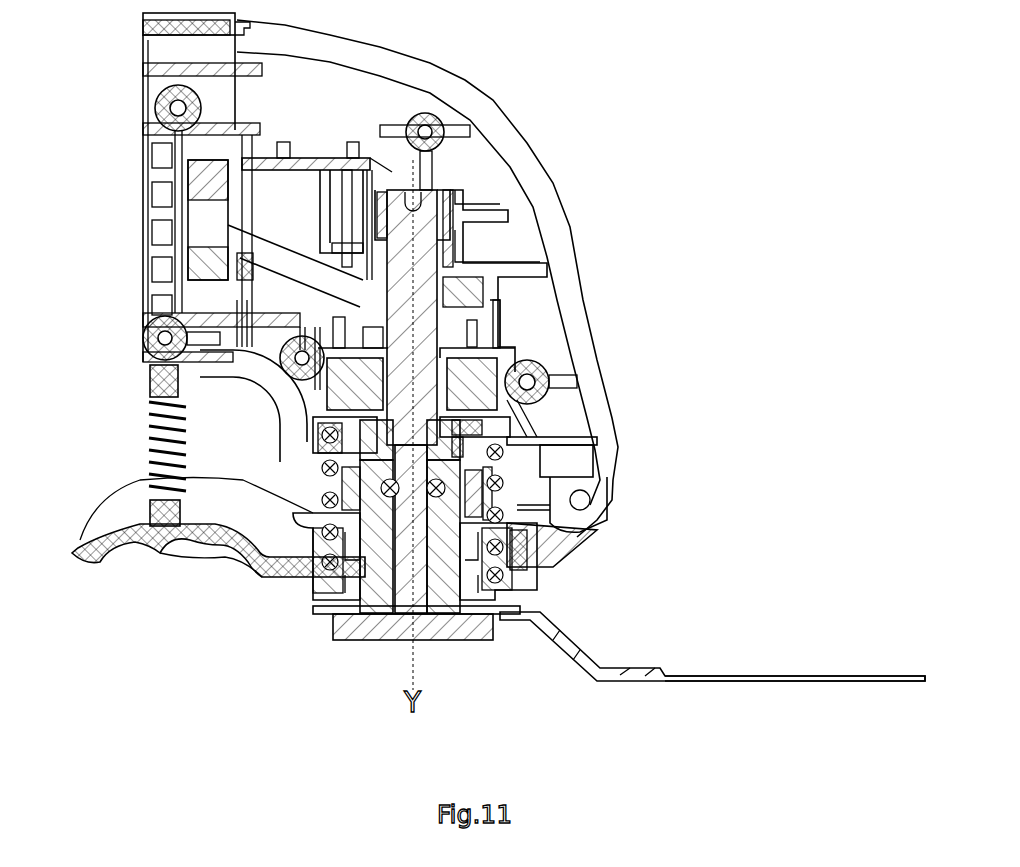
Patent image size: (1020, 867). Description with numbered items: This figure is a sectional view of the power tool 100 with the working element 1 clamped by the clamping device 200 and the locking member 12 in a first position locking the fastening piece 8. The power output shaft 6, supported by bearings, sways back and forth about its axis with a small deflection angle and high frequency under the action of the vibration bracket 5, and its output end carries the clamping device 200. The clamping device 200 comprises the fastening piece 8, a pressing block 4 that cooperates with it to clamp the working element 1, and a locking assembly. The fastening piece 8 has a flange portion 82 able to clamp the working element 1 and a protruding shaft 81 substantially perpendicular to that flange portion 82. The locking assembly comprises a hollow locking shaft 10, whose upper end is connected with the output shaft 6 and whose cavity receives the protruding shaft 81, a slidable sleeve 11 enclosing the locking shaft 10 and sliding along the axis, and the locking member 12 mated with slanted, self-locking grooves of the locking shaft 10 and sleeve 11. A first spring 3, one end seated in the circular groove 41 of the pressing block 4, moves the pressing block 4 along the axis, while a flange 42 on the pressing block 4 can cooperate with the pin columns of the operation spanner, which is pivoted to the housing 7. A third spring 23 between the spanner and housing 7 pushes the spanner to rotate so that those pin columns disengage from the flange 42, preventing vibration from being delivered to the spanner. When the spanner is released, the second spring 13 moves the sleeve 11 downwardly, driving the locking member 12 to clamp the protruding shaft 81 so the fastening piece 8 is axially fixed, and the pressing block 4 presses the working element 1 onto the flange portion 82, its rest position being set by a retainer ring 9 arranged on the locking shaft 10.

The power tool 100 is at (127, 178).
The clamping device 200 is at (156, 585).
The working element 1 is at (775, 678).
The first spring 3 is at (313, 480).
The pressing block 4 is at (500, 595).
The circular groove 41 is at (583, 540).
The flange 42 is at (300, 523).
The vibration bracket 5 is at (240, 237).
The power output shaft 6 is at (470, 252).
The housing 7 is at (508, 140).
The fastening piece 8 is at (390, 623).
The protruding shaft 81 is at (420, 565).
The flange portion 82 is at (447, 623).
The retainer ring 9 is at (313, 609).
The locking shaft 10 is at (565, 540).
The slidable sleeve 11 is at (592, 487).
The locking member 12 is at (593, 437).
The second spring 13 is at (278, 416).
The third spring 23 is at (142, 432).